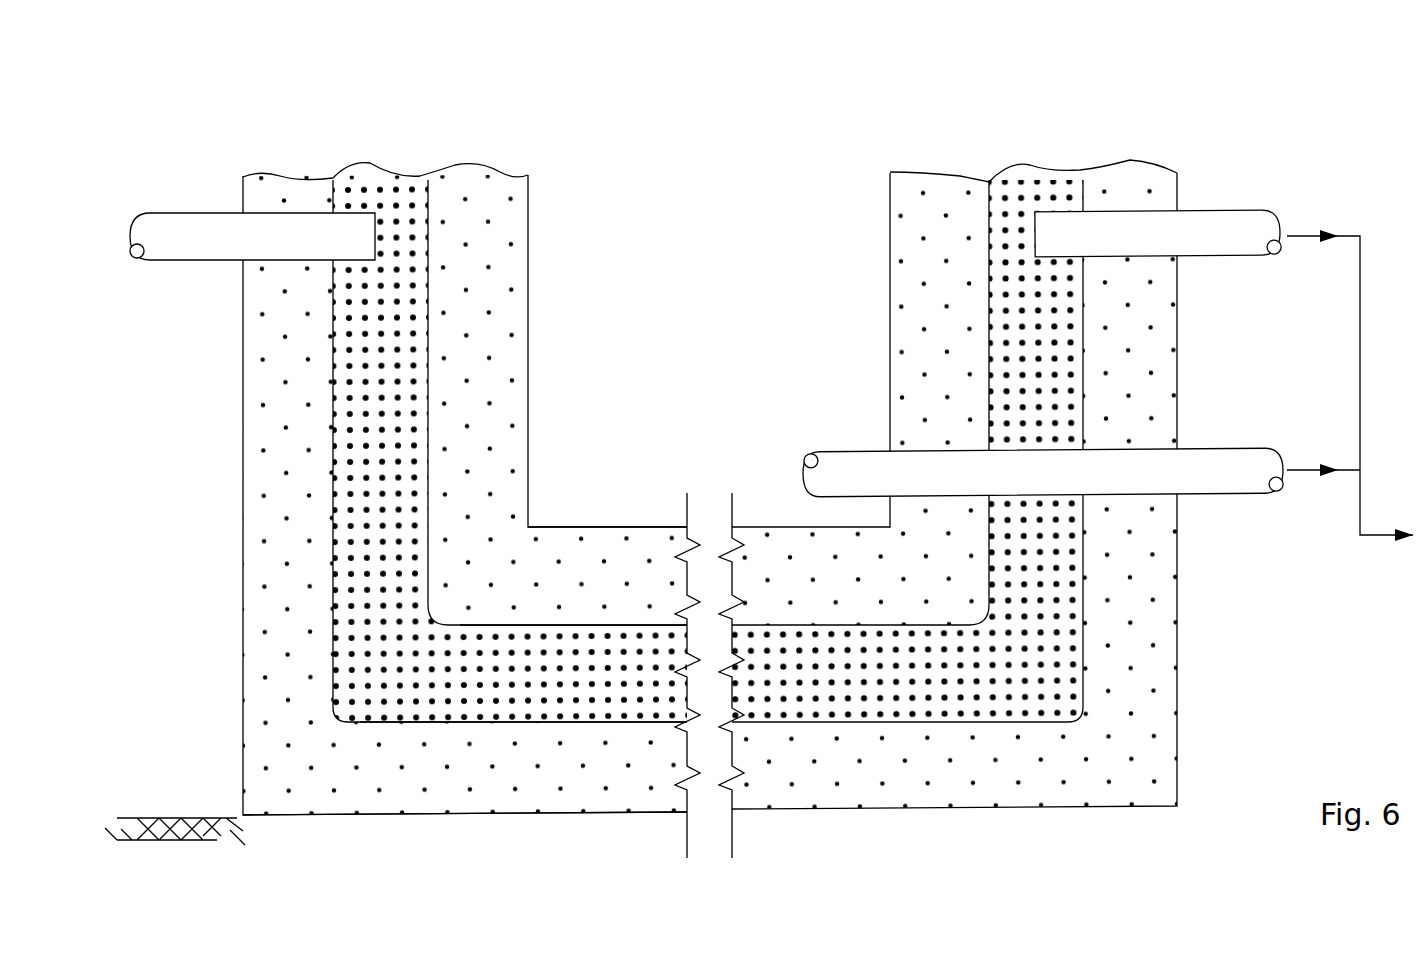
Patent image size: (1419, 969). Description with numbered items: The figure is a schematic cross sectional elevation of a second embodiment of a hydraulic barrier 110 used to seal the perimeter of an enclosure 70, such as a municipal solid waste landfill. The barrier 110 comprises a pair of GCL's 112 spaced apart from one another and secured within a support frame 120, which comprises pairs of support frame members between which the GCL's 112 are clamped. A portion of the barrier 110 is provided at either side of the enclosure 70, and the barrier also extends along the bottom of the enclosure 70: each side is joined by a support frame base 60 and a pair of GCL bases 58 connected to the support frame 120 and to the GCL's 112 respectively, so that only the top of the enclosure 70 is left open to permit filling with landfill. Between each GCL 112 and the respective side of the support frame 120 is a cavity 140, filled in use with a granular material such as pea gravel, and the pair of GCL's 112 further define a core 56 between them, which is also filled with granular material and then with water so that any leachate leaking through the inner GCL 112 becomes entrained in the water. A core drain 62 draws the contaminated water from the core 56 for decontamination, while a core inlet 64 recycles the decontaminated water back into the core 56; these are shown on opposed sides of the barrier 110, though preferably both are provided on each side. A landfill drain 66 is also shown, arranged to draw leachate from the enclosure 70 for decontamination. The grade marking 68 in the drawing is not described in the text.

The core 56 is at (370, 593).
The GCL base 58 is at (615, 625).
The support frame base 60 is at (647, 527).
The core drain 62 is at (1224, 220).
The core inlet 64 is at (207, 228).
The landfill drain 66 is at (1253, 482).
The ground 68 is at (235, 843).
The enclosure 70 is at (722, 421).
The hydraulic barrier 110 is at (750, 306).
The GCL 112 is at (332, 188).
The support frame 120 is at (243, 572).
The cavity 140 is at (260, 432).